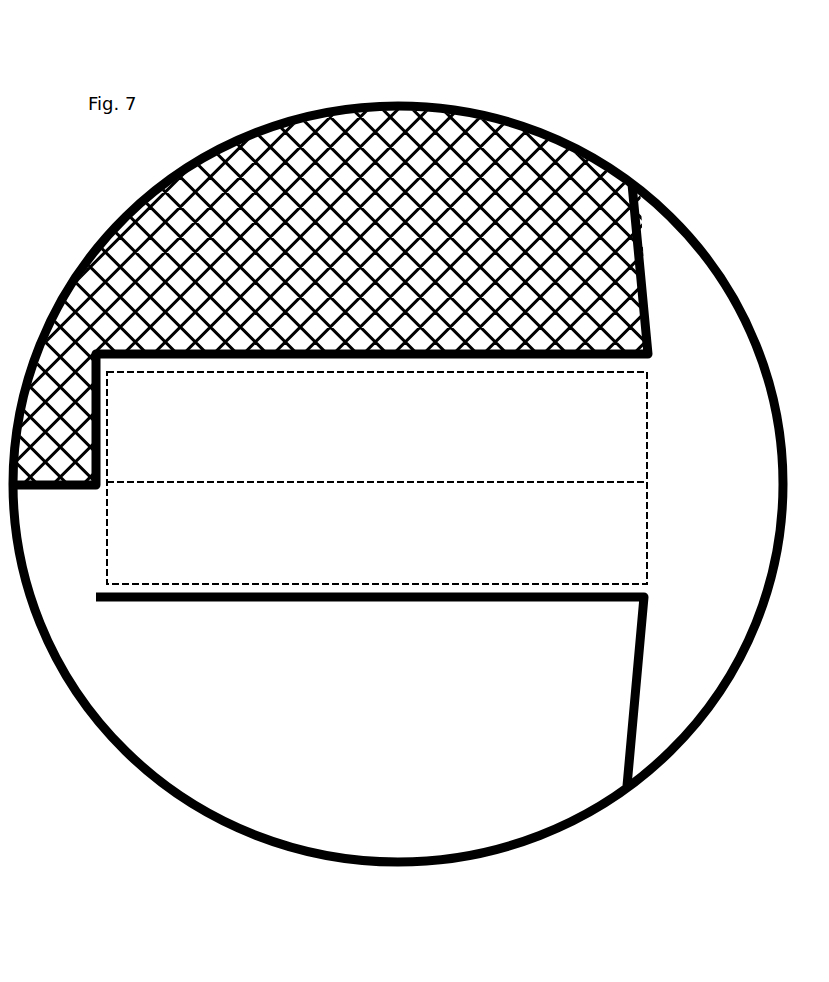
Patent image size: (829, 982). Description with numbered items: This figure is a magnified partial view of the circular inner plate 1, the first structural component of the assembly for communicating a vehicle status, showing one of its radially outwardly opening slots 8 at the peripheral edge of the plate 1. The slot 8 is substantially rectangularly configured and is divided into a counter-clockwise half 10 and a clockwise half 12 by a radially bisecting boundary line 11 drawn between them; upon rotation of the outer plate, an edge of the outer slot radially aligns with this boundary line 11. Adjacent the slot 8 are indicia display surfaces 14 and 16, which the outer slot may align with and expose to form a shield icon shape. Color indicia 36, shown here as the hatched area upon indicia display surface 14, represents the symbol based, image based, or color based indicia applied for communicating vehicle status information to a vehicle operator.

The inner plate 1 is at (637, 272).
The radially outwardly opening slot 8 is at (455, 600).
The counter-clockwise half 10 is at (540, 427).
The radially bisecting boundary line 11 is at (520, 482).
The clockwise half 12 is at (580, 518).
The indicia display surface 14 is at (480, 212).
The indicia display surface 16 is at (332, 768).
The color indicia 36 is at (347, 168).